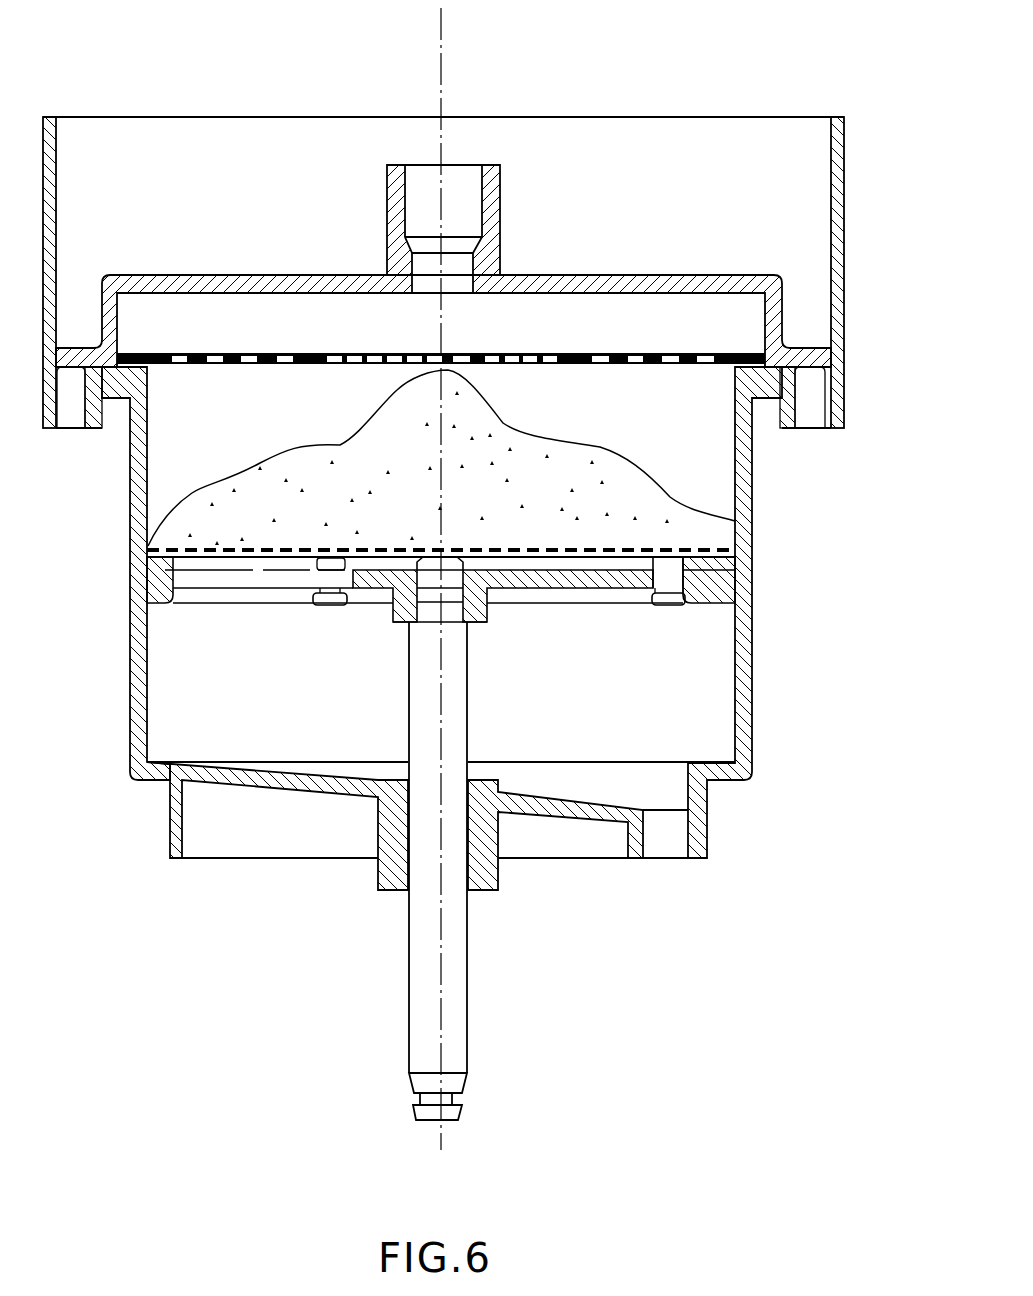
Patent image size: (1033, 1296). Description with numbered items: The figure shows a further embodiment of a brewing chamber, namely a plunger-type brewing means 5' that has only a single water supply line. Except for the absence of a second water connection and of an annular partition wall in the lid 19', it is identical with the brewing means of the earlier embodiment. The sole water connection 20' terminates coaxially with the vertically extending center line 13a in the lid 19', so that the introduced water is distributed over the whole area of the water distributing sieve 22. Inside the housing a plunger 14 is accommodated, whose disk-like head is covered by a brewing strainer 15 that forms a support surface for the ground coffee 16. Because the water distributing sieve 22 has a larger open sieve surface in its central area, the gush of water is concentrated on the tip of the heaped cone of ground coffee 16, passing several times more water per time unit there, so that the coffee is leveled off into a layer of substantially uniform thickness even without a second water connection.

The center line 13a is at (443, 37).
The water connection 20' is at (411, 229).
The lid 19' is at (478, 272).
The water distributing sieve 22 is at (258, 366).
The ground coffee 16 is at (410, 483).
The brewing strainer 15 is at (627, 547).
The brewing means 5' is at (484, 612).
The plunger 14 is at (667, 694).